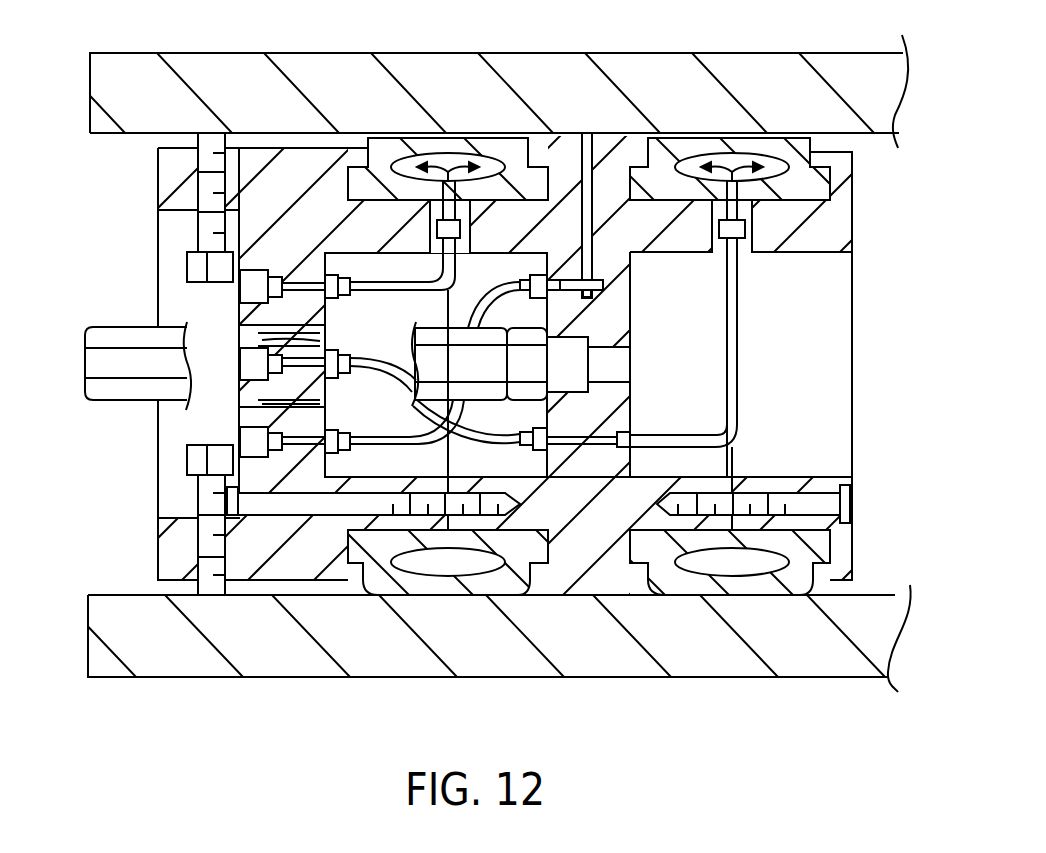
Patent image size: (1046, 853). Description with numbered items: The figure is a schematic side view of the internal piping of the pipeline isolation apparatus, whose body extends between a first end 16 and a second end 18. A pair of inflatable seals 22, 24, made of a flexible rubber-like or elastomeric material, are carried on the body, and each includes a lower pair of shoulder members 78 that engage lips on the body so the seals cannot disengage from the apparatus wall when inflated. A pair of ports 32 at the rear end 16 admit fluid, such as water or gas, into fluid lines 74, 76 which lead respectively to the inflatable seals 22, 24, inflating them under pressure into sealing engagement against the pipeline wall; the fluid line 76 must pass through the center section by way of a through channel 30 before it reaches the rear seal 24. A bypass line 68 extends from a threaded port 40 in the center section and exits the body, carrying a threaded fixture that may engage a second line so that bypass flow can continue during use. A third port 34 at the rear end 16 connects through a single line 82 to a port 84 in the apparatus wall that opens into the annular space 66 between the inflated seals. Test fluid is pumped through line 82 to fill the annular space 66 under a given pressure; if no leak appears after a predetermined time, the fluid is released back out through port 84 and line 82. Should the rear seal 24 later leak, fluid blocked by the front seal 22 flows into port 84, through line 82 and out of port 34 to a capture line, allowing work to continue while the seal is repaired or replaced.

The first end 16 is at (168, 238).
The second end 18 is at (845, 230).
The inflatable seal 22 is at (495, 145).
The inflatable seal 24 is at (722, 145).
The through channel 30 is at (600, 416).
The ports 32 is at (262, 362).
The third port 34 is at (242, 437).
The threaded port 40 is at (632, 303).
The annular space 66 is at (577, 145).
The bypass line 68 is at (34, 360).
The fluid line 74 is at (372, 283).
The fluid line 76 is at (737, 340).
The shoulder members 78 is at (362, 188).
The line 82 is at (470, 300).
The port 84 is at (587, 153).